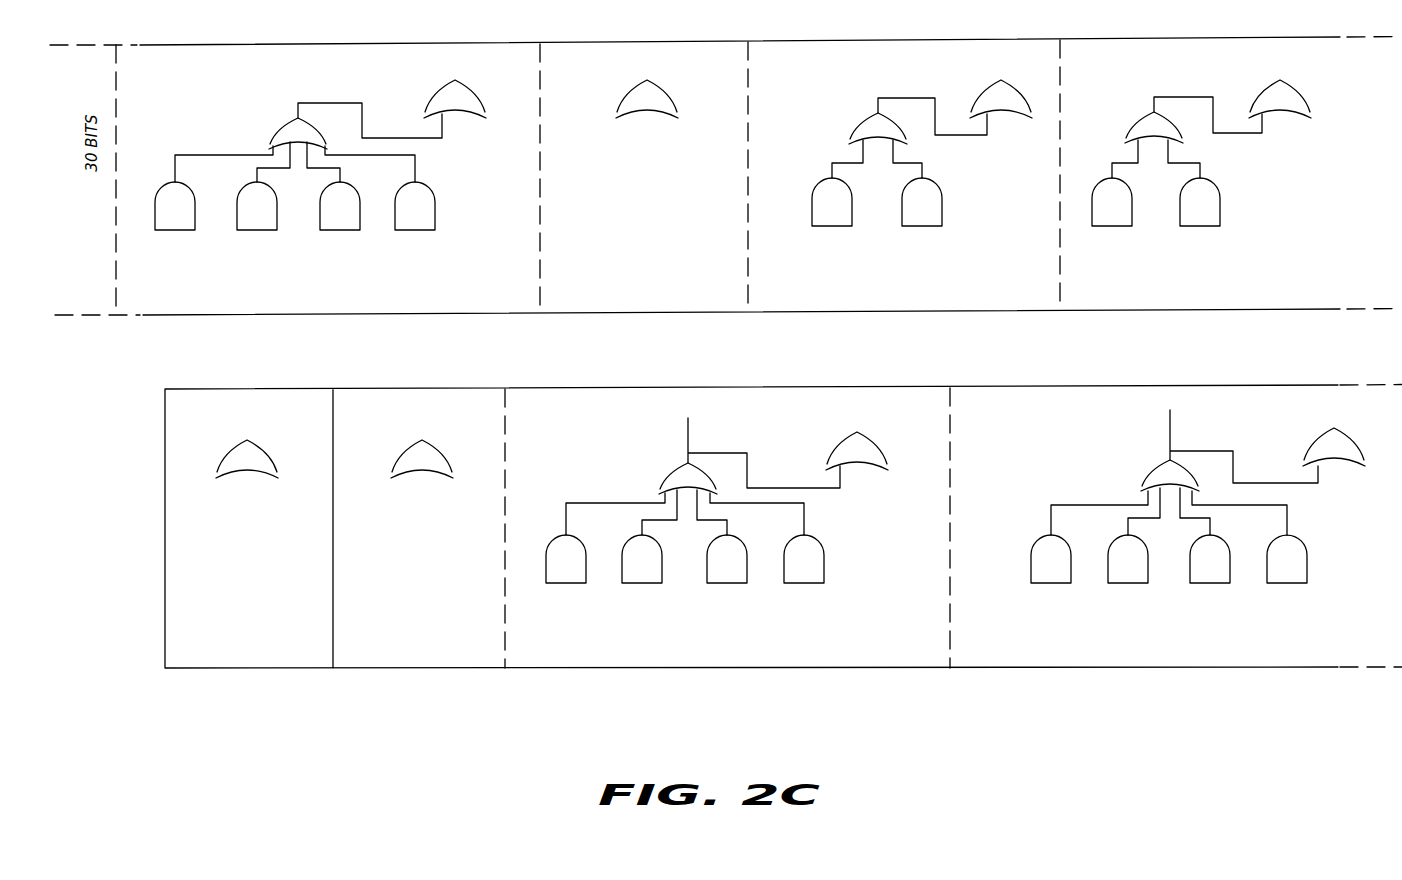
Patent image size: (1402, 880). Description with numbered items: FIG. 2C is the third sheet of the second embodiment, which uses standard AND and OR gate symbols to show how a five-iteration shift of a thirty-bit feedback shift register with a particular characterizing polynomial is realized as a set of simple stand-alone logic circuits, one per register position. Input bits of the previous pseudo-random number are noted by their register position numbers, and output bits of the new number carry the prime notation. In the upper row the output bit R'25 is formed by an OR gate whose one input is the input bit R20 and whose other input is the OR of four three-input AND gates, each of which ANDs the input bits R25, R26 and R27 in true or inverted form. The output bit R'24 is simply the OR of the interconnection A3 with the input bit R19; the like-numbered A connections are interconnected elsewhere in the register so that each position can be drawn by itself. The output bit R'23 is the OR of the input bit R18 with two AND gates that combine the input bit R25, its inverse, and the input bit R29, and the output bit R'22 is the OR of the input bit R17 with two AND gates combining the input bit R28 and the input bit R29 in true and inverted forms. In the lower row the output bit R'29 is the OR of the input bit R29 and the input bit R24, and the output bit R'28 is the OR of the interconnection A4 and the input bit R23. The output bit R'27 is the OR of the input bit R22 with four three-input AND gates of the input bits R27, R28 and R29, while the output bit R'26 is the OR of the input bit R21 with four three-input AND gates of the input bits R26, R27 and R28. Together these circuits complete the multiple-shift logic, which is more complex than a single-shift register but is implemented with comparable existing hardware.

The output bit R'25 is at (320, 140).
The input bit R20 is at (473, 114).
The input bit R25 is at (881, 251).
The input bit R26 is at (1303, 605).
The input bit R27 is at (1288, 630).
The output bit R'24 is at (647, 83).
The interconnection A3 is at (630, 113).
The input bit R19 is at (667, 113).
The output bit R'23 is at (922, 137).
The input bit R18 is at (1015, 114).
The input bit R29 is at (230, 540).
The output bit R'22 is at (1201, 136).
The input bit R17 is at (1295, 114).
The input bit R28 is at (1125, 226).
The output bit R'29 is at (247, 438).
The input bit R24 is at (265, 474).
The output bit R'28 is at (422, 438).
The interconnection A4 is at (403, 474).
The input bit R23 is at (440, 474).
The output bit R'27 is at (717, 489).
The input bit R22 is at (872, 466).
The output bit R'26 is at (1198, 488).
The input bit R21 is at (1350, 466).